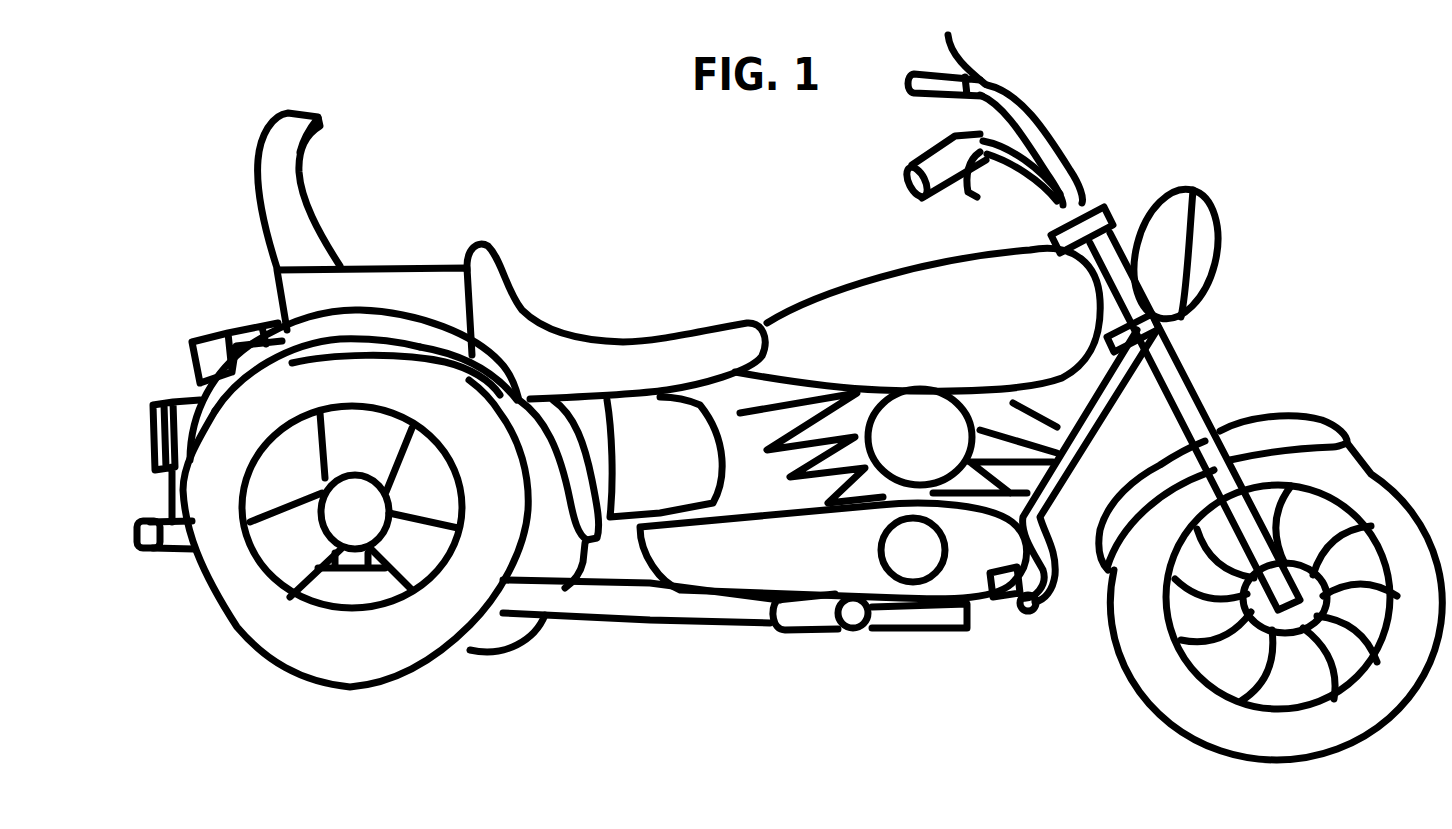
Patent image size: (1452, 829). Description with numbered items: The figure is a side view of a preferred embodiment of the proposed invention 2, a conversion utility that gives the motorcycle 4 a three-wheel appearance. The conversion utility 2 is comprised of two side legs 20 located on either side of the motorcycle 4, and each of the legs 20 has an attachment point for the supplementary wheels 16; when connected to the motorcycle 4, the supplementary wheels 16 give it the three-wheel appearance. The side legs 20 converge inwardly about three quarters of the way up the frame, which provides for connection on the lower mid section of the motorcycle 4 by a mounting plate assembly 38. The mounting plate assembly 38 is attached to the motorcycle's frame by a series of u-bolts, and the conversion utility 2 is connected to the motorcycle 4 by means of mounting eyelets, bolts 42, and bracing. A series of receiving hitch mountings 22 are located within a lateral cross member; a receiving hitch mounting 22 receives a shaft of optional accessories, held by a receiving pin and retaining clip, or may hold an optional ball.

The proposed invention 2 is at (376, 441).
The motorcycle 4 is at (605, 332).
The supplementary wheels 16 is at (360, 655).
The side legs 20 is at (635, 605).
The receiving hitch mountings 22 is at (150, 550).
The mounting plate assembly 38 is at (957, 633).
The bolts 42 is at (855, 626).